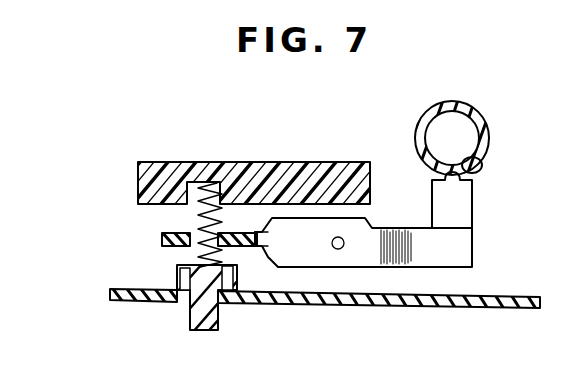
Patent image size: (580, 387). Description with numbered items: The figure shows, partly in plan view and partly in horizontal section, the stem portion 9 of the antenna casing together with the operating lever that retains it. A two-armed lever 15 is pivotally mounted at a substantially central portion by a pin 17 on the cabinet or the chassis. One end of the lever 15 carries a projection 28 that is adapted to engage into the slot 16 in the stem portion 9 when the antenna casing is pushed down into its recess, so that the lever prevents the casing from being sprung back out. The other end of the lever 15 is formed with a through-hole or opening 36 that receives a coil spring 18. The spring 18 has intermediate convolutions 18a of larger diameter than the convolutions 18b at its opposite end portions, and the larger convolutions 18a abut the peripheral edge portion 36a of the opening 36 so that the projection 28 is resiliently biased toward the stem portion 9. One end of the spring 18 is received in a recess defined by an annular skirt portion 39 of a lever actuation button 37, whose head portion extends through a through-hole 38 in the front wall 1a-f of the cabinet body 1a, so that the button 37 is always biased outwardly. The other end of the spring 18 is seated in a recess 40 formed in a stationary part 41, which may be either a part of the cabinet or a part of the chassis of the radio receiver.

The stationary part 41 is at (140, 170).
The recess 40 is at (217, 183).
The peripheral edge portion of the opening 36a is at (245, 228).
The coil spring 18 is at (200, 209).
The intermediate convolutions 18a is at (190, 233).
The end convolutions 18b is at (172, 248).
The annular skirt portion 39 is at (182, 267).
The opening 36 is at (234, 266).
The two-armed lever 15 is at (302, 250).
The pin 17 is at (344, 247).
The projection 28 is at (450, 180).
The stem portion 9 is at (488, 137).
The slot 16 is at (481, 164).
The lever actuation button 37 is at (217, 323).
The through-hole 38 is at (188, 306).
The cabinet body 1a is at (303, 307).
The front wall 1a-f is at (135, 303).